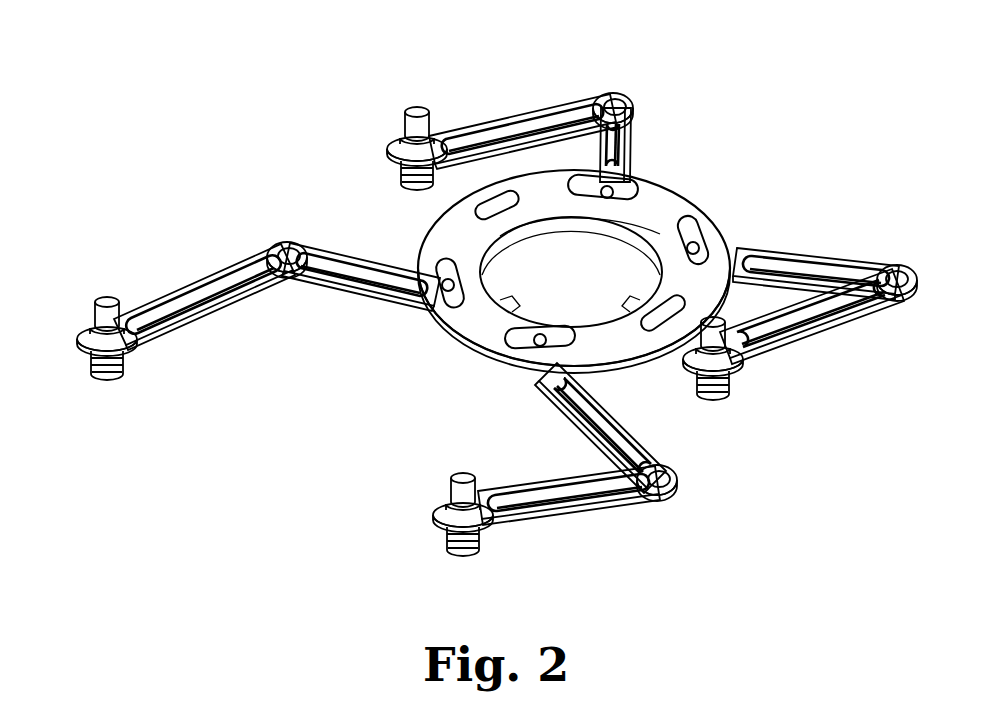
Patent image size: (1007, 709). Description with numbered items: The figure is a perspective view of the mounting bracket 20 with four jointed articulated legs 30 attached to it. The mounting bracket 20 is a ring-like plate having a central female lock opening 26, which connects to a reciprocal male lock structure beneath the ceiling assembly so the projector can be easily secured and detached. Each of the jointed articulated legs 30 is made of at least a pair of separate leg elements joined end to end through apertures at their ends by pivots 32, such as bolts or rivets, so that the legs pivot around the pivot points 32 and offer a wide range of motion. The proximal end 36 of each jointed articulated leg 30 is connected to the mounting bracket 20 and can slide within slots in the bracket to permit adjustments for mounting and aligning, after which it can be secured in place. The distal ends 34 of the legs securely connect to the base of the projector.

The mounting bracket 20 is at (683, 200).
The female lock opening 26 is at (600, 290).
The jointed articulated legs 30 is at (507, 113).
The pivots 32 is at (623, 97).
The distal ends 34 is at (412, 108).
The proximal end 36 is at (430, 283).